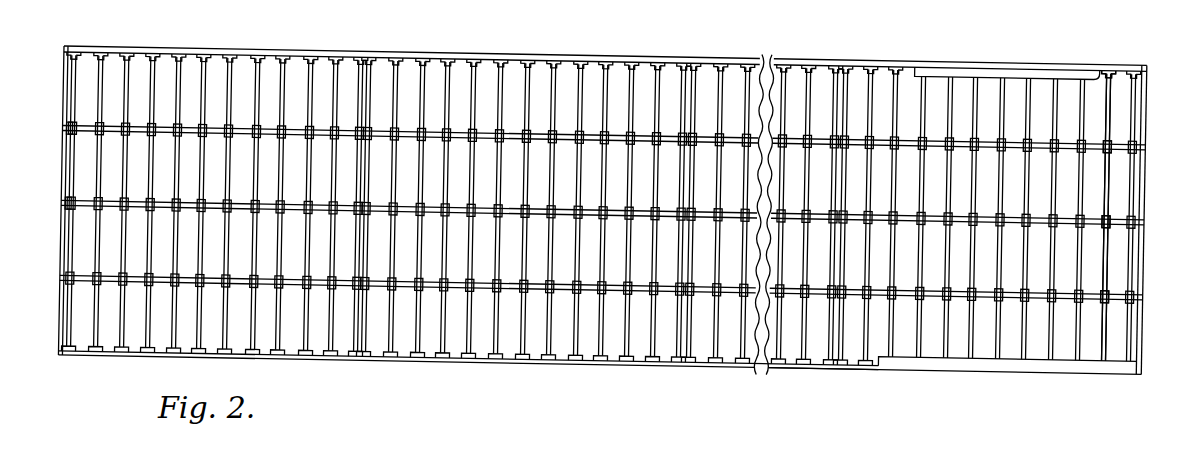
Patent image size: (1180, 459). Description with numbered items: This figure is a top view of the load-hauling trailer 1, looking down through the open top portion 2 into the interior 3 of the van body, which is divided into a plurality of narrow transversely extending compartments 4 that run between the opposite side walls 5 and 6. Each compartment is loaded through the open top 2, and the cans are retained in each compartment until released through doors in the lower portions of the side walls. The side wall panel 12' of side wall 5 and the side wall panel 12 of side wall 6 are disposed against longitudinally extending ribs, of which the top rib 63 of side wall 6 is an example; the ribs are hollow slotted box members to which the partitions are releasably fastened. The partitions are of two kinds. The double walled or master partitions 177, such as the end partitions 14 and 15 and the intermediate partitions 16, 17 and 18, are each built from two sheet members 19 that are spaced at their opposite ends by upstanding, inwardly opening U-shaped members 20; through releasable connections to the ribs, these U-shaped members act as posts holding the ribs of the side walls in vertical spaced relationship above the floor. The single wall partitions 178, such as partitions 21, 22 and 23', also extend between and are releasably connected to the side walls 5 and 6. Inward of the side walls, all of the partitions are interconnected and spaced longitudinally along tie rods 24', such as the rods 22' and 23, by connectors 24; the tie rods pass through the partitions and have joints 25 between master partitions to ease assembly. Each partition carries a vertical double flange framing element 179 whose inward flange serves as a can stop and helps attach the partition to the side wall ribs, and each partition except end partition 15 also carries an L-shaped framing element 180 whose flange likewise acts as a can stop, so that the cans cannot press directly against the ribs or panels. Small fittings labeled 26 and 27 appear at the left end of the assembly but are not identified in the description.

The load-hauling trailer 1 is at (968, 339).
The open top portion 2 is at (1154, 219).
The interior 3 is at (1146, 216).
The compartments 4 is at (486, 195).
The side wall 5 is at (561, 199).
The side wall 6 is at (468, 371).
The side wall panel 12 is at (952, 376).
The side wall panel 12' is at (1008, 60).
The end partition 14 is at (46, 200).
The end partition 15 is at (1154, 220).
The intermediate partition 16 is at (372, 204).
The intermediate partition 17 is at (679, 210).
The intermediate partition 18 is at (802, 135).
The sheet members 19 is at (9, 182).
The U-shaped members 20 is at (605, 51).
The single wall partition 21 is at (35, 207).
The single wall partition 22 is at (325, 206).
The tie rod 22' is at (601, 277).
The tie rod 23 is at (602, 231).
The single wall partition 23' is at (404, 205).
The connectors 24 is at (1005, 219).
The tie rods 24' is at (952, 213).
The joints 25 is at (602, 201).
The rail end clip 26 is at (45, 203).
The rail end clip 27 is at (81, 161).
The top rib 63 is at (703, 373).
The double walled partitions 177 is at (212, 355).
The single wall partitions 178 is at (226, 204).
The double flange member 179 is at (499, 368).
The L-shaped member 180 is at (408, 368).